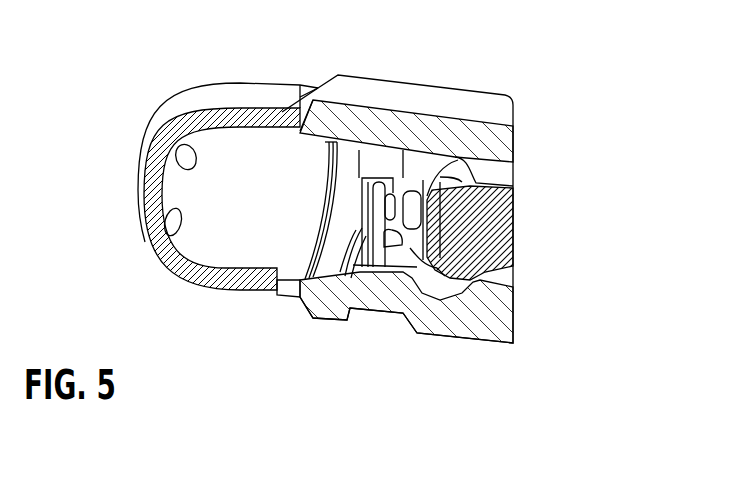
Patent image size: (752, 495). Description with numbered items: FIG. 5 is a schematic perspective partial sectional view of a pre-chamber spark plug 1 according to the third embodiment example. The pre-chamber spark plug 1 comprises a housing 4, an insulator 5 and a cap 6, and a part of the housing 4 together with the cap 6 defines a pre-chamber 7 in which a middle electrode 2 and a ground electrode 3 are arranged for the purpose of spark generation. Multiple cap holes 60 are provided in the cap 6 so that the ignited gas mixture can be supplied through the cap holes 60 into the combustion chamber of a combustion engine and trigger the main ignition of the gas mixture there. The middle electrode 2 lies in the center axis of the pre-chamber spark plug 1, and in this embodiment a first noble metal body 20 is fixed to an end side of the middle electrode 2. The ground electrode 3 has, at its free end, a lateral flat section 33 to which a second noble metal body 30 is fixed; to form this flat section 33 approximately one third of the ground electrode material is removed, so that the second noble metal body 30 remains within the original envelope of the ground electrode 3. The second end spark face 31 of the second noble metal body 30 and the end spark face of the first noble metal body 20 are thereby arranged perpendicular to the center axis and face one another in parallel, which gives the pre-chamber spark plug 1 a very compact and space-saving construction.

The pre-chamber spark plug 1 is at (126, 84).
The middle electrode 2 is at (430, 180).
The ground electrode 3 is at (388, 236).
The housing 4 is at (363, 127).
The insulator 5 is at (508, 243).
The cap 6 is at (221, 268).
The pre-chamber 7 is at (247, 251).
The first noble metal body 20 is at (437, 252).
The second noble metal body 30 is at (336, 283).
The second end spark face 31 is at (412, 192).
The lateral flat section 33 is at (397, 252).
The cap holes 60 is at (191, 150).